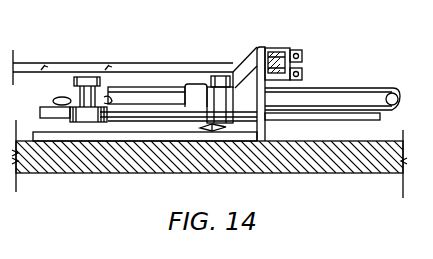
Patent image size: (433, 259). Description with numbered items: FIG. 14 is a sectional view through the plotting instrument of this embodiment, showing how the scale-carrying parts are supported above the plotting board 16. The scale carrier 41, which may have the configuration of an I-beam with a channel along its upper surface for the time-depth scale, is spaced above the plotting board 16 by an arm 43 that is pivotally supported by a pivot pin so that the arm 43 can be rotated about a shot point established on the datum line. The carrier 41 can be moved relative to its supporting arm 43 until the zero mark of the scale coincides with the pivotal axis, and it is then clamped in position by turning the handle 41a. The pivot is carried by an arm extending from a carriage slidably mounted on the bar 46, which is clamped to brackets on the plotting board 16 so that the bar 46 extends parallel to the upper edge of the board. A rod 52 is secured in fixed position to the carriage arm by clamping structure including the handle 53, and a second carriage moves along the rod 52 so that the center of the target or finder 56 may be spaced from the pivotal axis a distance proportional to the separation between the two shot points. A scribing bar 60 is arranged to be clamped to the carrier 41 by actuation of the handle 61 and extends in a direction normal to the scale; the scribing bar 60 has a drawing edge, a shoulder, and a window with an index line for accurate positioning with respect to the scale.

The plotting board 16 is at (343, 168).
The scale carrier 41 is at (277, 62).
The handle 41a is at (303, 74).
The arm 43 is at (247, 85).
The bar 46 is at (393, 92).
The rod 52 is at (381, 118).
The handle 53 is at (210, 129).
The target or finder 56 is at (86, 80).
The scribing bar 60 is at (172, 70).
The handle 61 is at (300, 51).